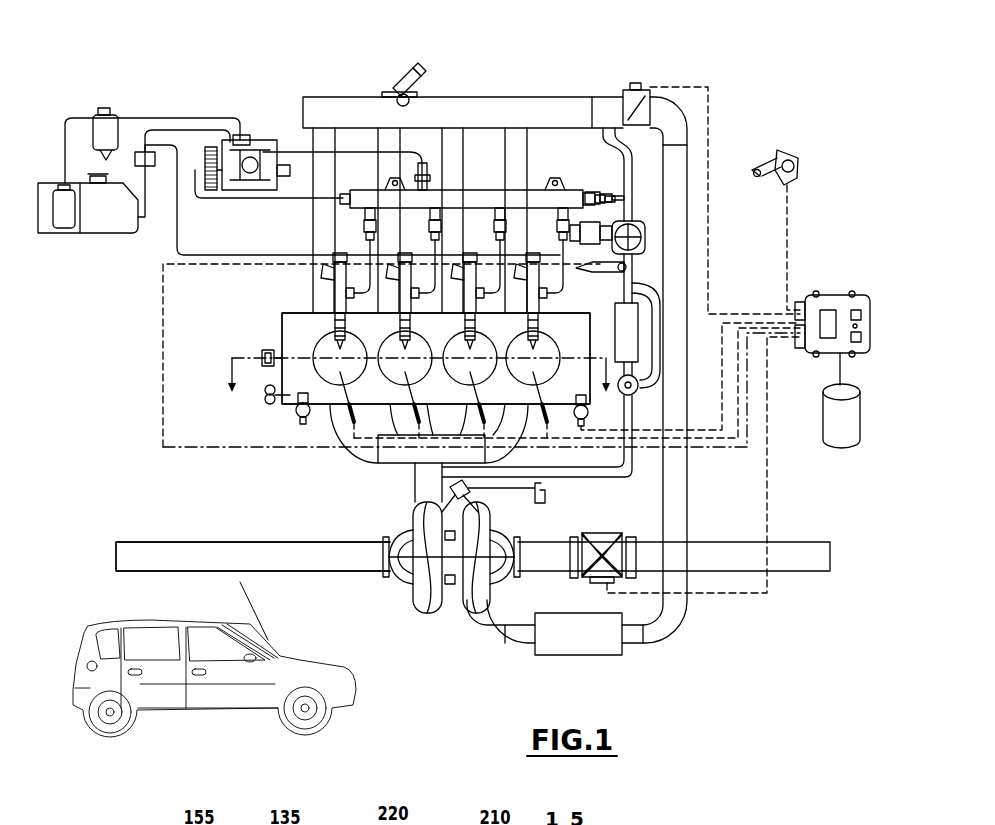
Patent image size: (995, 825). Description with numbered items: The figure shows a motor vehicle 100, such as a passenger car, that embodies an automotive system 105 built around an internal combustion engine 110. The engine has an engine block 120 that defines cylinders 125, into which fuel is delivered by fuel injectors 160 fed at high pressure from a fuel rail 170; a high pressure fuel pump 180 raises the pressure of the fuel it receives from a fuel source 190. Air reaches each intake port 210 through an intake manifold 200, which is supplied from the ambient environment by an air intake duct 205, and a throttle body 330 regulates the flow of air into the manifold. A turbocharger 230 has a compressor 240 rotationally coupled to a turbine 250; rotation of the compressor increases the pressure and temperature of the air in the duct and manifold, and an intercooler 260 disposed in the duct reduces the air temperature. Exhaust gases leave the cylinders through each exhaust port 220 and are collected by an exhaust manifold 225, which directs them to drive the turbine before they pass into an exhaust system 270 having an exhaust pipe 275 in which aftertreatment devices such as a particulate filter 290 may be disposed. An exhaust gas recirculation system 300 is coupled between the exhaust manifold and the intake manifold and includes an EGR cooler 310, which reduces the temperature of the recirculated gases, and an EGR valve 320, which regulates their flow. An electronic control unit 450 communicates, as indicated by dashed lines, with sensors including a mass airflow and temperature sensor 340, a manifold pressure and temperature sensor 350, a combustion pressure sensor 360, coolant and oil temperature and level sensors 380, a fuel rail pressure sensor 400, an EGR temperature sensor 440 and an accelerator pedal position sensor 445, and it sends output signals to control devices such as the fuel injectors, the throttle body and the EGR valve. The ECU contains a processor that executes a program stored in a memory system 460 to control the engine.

The motor vehicle 100 is at (175, 700).
The automotive system 105 is at (217, 79).
The internal combustion engine 110 is at (543, 83).
The engine block 120 is at (282, 320).
The cylinder 125 is at (553, 338).
The fuel injector 160 is at (343, 295).
The fuel rail 170 is at (370, 200).
The high pressure fuel pump 180 is at (255, 140).
The fuel source 190 is at (110, 220).
The intake manifold 200 is at (455, 113).
The air intake duct 205 is at (680, 517).
The intake port 210 is at (325, 312).
The exhaust port 220 is at (332, 416).
The exhaust manifold 225 is at (405, 457).
The turbocharger 230 is at (420, 622).
The compressor 240 is at (478, 583).
The turbine 250 is at (425, 578).
The intercooler 260 is at (603, 640).
The exhaust system 270 is at (185, 519).
The exhaust pipe 275 is at (122, 556).
The particulate filter 290 is at (470, 492).
The exhaust gas recirculation system 300 is at (598, 487).
The EGR cooler 310 is at (631, 345).
The EGR valve 320 is at (631, 218).
The throttle body 330 is at (641, 83).
The mass airflow and temperature sensor 340 is at (595, 580).
The manifold pressure and temperature sensor 350 is at (397, 83).
The combustion pressure sensor 360 is at (350, 424).
The coolant and oil temperature and level sensors 380 is at (295, 410).
The fuel rail pressure sensor 400 is at (613, 195).
The EGR temperature sensor 440 is at (632, 262).
The accelerator pedal position sensor 445 is at (792, 152).
The electronic control unit 450 is at (838, 293).
The memory system 460 is at (840, 435).